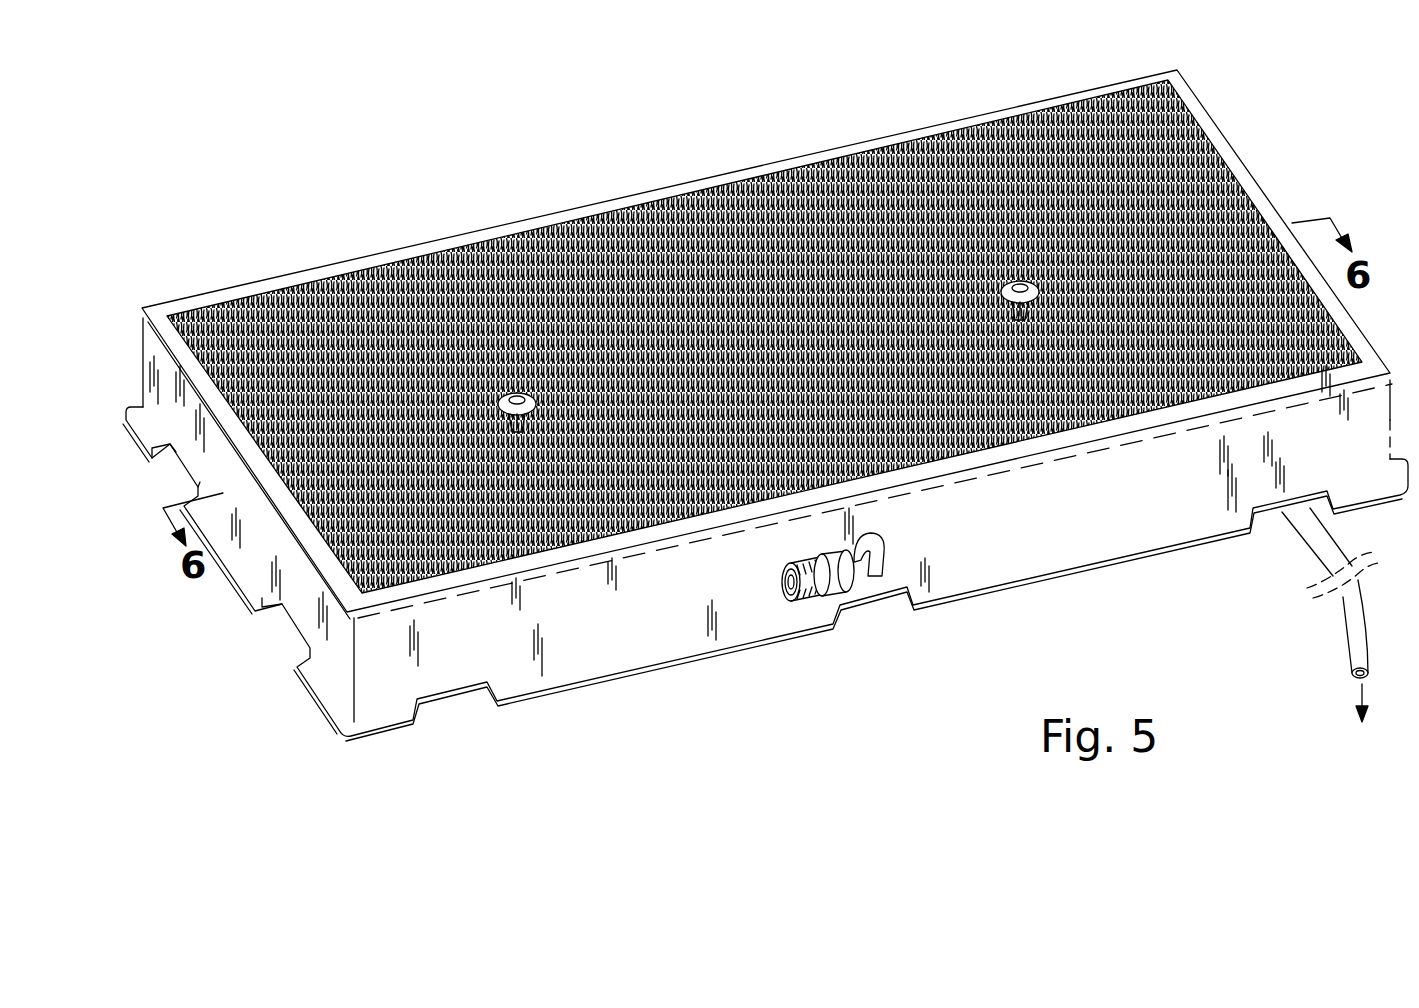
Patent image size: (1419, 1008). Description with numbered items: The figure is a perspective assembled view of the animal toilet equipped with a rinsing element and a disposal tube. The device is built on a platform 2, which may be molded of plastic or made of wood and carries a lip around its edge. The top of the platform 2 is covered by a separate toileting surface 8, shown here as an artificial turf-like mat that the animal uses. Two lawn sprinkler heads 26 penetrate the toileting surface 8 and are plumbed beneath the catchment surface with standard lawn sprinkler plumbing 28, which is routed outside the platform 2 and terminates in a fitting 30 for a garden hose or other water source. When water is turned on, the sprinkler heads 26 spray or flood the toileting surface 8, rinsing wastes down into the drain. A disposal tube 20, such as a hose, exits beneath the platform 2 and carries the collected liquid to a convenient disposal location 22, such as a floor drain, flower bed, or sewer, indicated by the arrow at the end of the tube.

The platform 2 is at (630, 642).
The toileting surface 8 is at (767, 187).
The disposal tube 20 is at (1310, 530).
The disposal location 22 is at (1357, 697).
The lawn sprinkler head 26 is at (513, 397).
The lawn sprinkler plumbing 28 is at (867, 570).
The fitting 30 is at (810, 603).